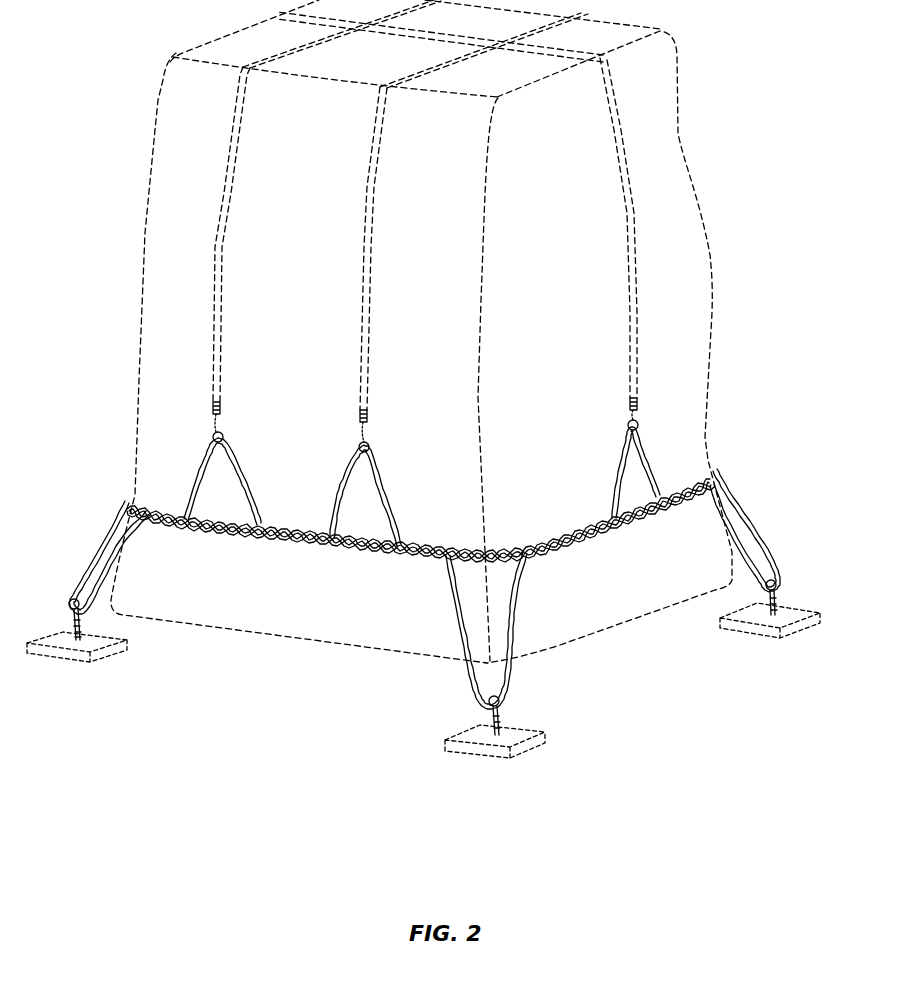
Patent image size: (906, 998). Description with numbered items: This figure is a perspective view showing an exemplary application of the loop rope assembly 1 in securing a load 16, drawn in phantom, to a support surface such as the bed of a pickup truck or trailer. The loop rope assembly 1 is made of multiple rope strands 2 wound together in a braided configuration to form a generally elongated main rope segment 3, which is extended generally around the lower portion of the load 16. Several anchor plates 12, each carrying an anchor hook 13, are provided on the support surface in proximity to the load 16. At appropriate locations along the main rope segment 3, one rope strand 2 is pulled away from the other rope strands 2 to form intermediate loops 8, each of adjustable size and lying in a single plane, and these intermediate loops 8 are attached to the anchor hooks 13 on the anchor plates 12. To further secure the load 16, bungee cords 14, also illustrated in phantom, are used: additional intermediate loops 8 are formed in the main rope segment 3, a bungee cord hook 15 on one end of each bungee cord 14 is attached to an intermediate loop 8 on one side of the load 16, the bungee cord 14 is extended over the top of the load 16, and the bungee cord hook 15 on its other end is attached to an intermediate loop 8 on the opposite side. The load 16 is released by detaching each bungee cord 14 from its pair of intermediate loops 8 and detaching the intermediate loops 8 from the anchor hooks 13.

The loop rope assembly 1 is at (423, 537).
The rope strand 2 is at (197, 480).
The main rope segment 3 is at (245, 547).
The intermediate loop 8 is at (103, 533).
The anchor plate 12 is at (110, 652).
The anchor hook 13 is at (70, 622).
The bungee cord 14 is at (370, 187).
The bungee cord hook 15 is at (212, 430).
The load 16 is at (157, 130).